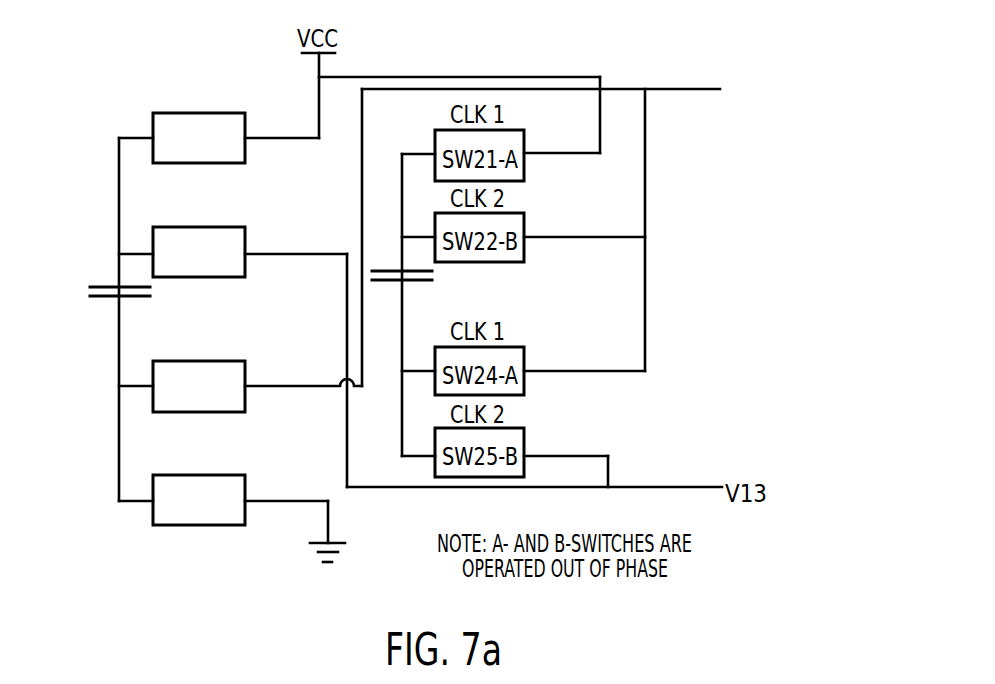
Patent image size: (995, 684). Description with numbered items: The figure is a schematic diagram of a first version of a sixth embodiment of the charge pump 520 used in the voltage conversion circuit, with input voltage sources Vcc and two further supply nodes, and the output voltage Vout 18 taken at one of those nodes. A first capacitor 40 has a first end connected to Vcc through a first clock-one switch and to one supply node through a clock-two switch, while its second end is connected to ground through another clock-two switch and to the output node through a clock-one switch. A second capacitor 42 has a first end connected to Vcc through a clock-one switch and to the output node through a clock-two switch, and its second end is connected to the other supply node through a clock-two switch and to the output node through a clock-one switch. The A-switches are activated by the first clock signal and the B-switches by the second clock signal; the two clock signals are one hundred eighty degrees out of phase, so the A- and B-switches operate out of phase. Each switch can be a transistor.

The output voltage VOUT 18 is at (627, 94).
The first capacitor 40 is at (107, 283).
The second capacitor 42 is at (420, 281).
The charge pump 520 is at (104, 327).